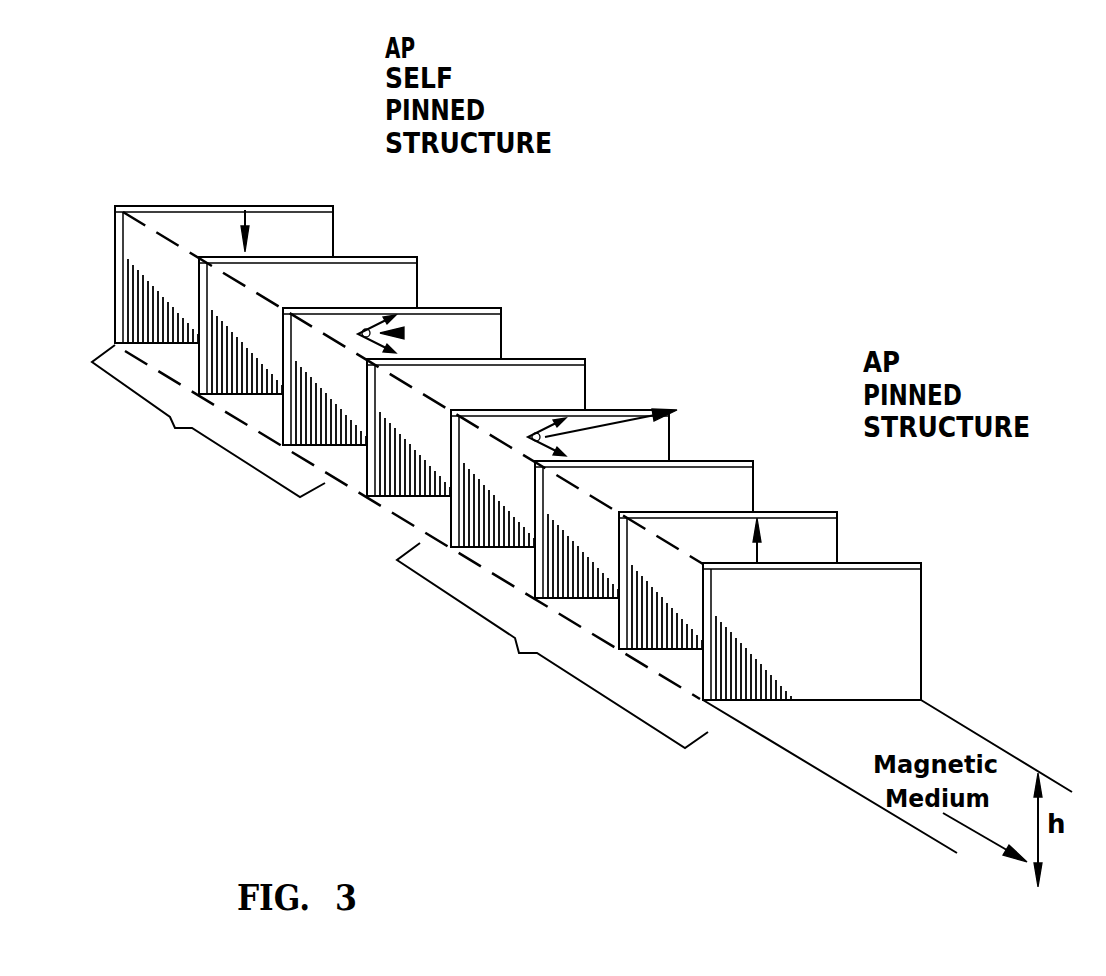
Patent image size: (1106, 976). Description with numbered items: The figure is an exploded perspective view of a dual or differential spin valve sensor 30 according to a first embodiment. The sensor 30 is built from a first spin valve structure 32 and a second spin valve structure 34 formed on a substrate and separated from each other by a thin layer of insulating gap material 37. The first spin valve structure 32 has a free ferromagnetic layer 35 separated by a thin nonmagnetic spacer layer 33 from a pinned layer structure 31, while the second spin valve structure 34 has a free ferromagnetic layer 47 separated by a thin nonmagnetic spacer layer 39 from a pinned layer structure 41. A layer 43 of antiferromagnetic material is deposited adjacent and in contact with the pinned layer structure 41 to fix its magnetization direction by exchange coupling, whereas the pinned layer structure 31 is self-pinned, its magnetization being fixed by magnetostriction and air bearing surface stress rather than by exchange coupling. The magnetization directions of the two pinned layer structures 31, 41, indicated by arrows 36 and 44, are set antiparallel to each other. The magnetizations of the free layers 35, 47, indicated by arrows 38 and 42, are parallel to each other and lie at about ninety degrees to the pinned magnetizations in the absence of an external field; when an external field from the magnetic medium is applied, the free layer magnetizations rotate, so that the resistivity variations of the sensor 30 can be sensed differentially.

The dual/differential spin valve sensor 30 is at (311, 556).
The pinned layer structure 31 is at (300, 205).
The first spin valve structure 32 is at (208, 435).
The nonmagnetic spacer layer 33 is at (378, 255).
The second spin valve structure 34 is at (552, 647).
The free ferromagnetic layer 35 is at (452, 306).
The arrow 36 is at (248, 214).
The insulating gap material layer 37 is at (527, 357).
The arrow 38 is at (400, 333).
The nonmagnetic spacer layer 39 is at (682, 459).
The pinned layer structure 41 is at (812, 510).
The arrow 42 is at (677, 410).
The antiferromagnetic layer 43 is at (875, 561).
The arrow 44 is at (760, 549).
The free ferromagnetic layer 47 is at (597, 408).